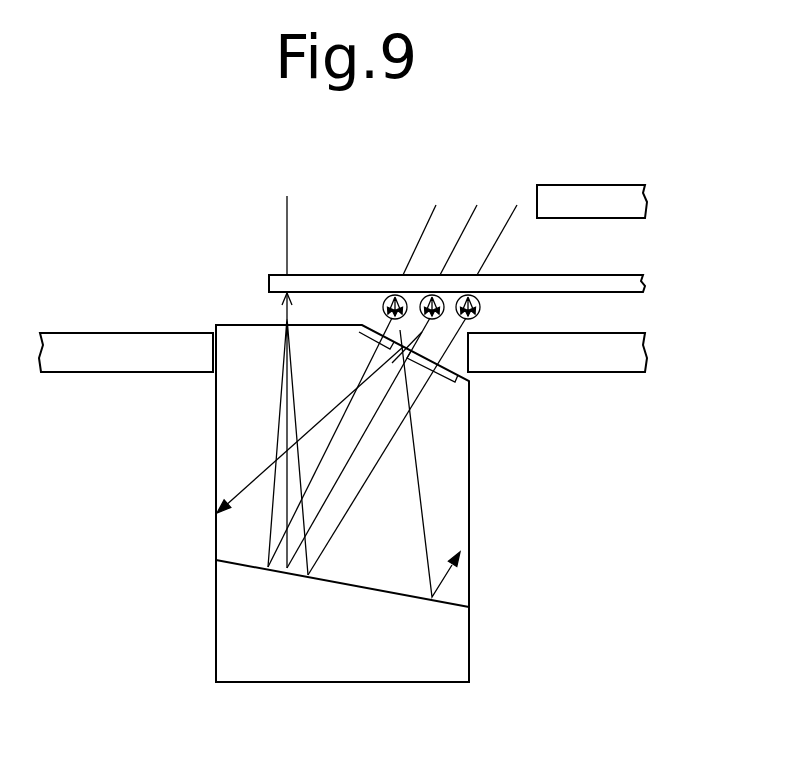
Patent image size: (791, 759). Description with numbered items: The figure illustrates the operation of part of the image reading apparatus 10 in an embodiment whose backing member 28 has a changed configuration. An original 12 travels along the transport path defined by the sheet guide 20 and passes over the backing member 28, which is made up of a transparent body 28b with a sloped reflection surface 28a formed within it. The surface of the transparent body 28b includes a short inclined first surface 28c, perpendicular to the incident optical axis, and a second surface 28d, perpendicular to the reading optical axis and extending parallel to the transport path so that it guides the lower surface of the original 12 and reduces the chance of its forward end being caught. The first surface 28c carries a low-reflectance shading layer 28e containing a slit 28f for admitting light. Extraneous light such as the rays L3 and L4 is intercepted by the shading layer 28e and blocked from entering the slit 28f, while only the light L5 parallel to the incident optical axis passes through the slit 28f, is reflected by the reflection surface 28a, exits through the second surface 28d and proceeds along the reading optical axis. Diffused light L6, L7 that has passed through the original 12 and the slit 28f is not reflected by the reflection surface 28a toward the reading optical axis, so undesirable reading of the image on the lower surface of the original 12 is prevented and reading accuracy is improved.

The image reading apparatus 10 is at (525, 175).
The original 12 is at (648, 285).
The sheet guide 20 is at (650, 200).
The backing member 28 is at (198, 567).
The reflection surface 28a is at (383, 592).
The transparent body 28b is at (232, 637).
The first surface 28c is at (456, 384).
The second surface 28d is at (243, 325).
The shading layer 28e is at (459, 368).
The slit 28f is at (404, 352).
The extraneous light L3 is at (420, 237).
The extraneous light L4 is at (490, 255).
The light parallel to the incident optical axis L5 is at (470, 218).
The diffused light L6 is at (250, 487).
The diffused light L7 is at (425, 530).